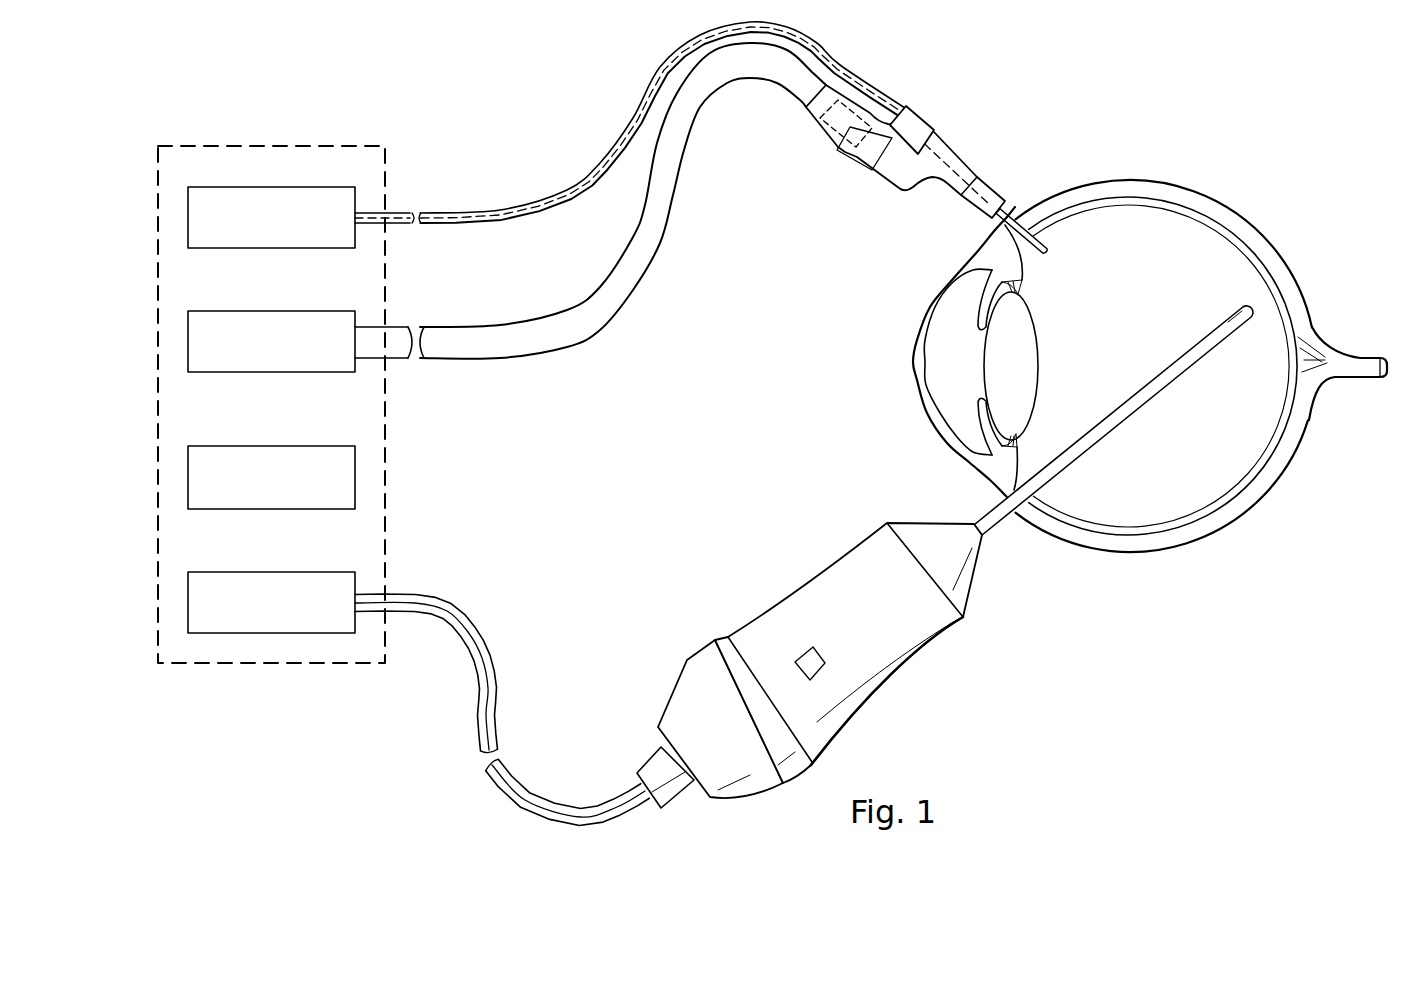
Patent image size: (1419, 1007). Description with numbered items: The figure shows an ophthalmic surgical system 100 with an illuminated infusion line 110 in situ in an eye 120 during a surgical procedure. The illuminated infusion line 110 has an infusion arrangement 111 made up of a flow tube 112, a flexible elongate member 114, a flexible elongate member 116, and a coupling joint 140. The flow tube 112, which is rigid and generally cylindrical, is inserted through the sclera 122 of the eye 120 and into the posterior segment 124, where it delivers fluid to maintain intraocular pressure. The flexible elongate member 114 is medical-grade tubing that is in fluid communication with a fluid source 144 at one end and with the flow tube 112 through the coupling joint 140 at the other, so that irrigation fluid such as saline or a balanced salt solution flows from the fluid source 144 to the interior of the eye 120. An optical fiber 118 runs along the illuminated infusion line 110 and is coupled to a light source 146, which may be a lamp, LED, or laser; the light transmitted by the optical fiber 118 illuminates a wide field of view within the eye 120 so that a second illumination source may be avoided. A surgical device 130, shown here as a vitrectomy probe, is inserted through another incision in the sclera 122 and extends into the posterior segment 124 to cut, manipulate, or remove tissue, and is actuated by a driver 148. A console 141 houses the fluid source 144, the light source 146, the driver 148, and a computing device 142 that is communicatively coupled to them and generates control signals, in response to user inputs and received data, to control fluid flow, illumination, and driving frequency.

The ophthalmic surgical system 100 is at (1123, 74).
The illuminated infusion line 110 is at (750, 222).
The infusion arrangement 111 is at (961, 126).
The flow tube 112 is at (1050, 243).
The flexible elongate member 114 is at (636, 290).
The flexible elongate member 116 is at (619, 134).
The optical fiber 118 is at (504, 207).
The eye 120 is at (1249, 207).
The sclera 122 is at (1135, 553).
The posterior segment 124 is at (1162, 226).
The surgical device 130 is at (788, 573).
The coupling joint 140 is at (897, 186).
The console 141 is at (233, 139).
The computing device 142 is at (240, 510).
The fluid source 144 is at (313, 310).
The light source 146 is at (240, 250).
The driver 148 is at (312, 572).